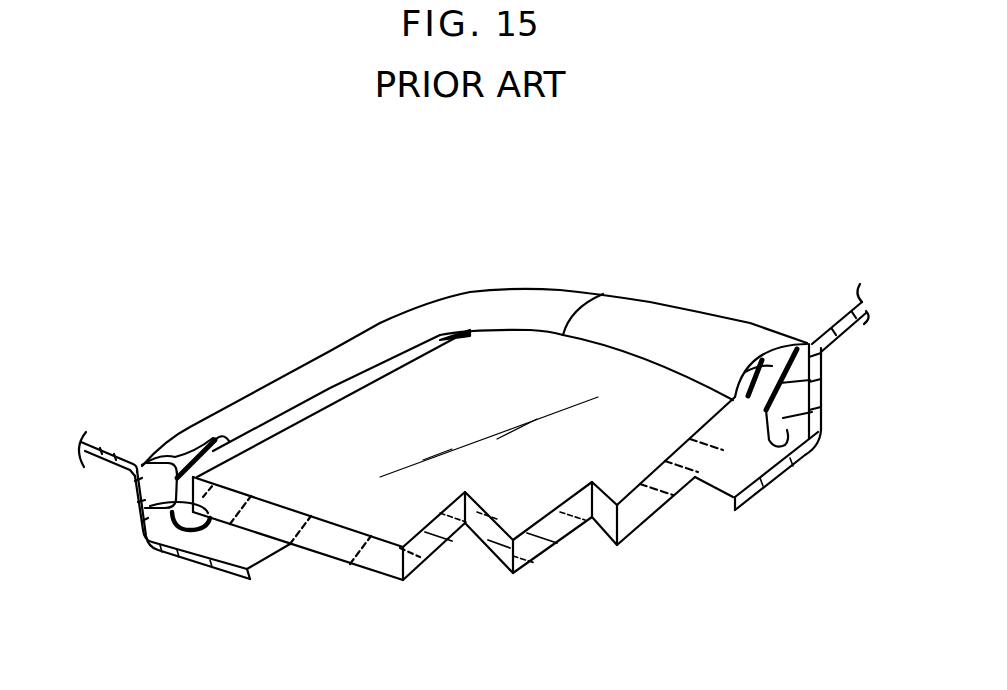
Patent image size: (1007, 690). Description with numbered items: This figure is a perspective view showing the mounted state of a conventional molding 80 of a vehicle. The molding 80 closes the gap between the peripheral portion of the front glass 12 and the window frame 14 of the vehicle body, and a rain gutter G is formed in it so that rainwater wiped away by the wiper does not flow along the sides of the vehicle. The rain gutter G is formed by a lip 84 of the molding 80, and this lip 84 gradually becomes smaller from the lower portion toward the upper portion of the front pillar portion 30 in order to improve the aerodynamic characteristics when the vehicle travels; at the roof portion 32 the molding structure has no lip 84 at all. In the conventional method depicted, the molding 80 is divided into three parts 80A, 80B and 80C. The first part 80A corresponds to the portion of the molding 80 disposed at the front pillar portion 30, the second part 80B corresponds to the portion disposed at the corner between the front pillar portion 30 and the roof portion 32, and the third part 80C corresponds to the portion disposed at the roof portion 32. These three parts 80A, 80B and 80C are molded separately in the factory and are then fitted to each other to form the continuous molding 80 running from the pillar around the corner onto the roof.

The front glass 12 is at (363, 520).
The window frame 14 is at (151, 513).
The front pillar portion 30 is at (124, 413).
The roof portion 32 is at (765, 268).
The molding 80 is at (292, 230).
The molding part at front pillar portion 80A is at (288, 372).
The molding part at corner portion 80B is at (447, 301).
The molding part at roof portion 80C is at (640, 295).
The lip 84 is at (249, 417).
The rain gutter G is at (311, 401).